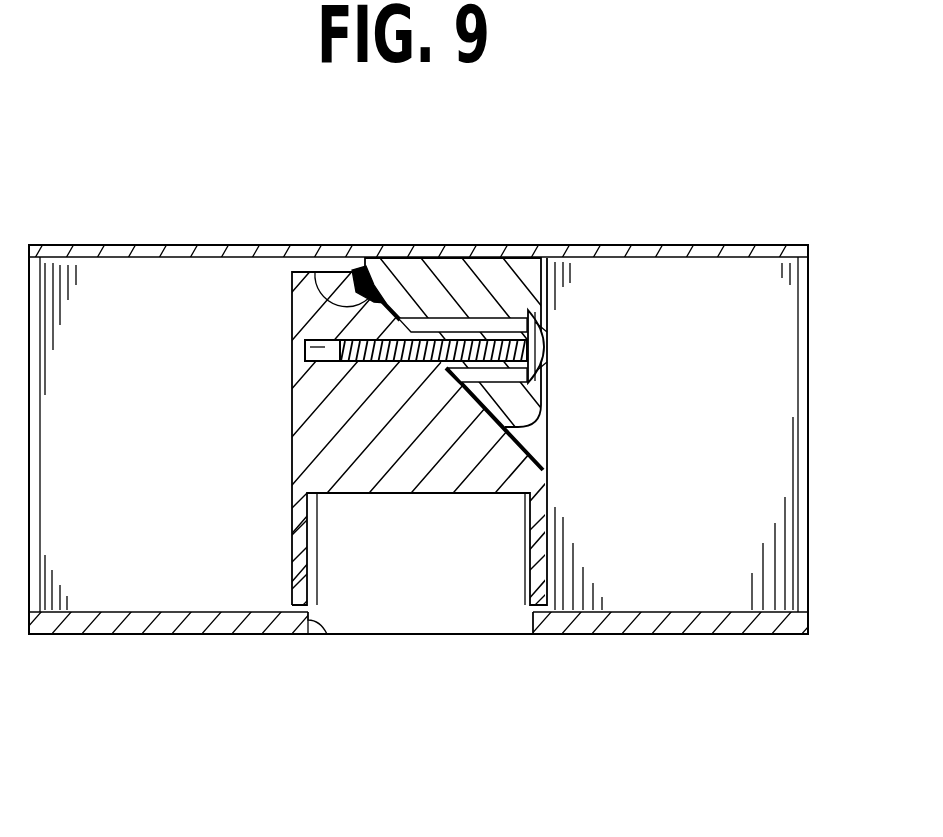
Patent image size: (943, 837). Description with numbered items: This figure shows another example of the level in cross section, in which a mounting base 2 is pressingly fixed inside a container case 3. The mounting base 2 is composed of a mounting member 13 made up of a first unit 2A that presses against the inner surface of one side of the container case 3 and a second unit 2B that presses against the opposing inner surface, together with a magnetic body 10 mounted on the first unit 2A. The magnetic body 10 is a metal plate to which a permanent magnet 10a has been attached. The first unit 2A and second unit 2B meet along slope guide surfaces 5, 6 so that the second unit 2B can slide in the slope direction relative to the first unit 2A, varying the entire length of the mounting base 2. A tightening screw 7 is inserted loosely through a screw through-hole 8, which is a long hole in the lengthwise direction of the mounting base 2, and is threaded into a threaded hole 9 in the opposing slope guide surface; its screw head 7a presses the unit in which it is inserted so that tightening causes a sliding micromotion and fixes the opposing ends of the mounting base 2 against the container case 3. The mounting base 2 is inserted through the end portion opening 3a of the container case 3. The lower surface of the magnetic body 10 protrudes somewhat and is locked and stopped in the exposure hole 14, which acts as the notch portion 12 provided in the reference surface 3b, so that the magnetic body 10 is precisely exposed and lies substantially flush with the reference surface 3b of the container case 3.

The mounting base 2 is at (434, 383).
The first unit 2A is at (292, 465).
The second unit 2B is at (447, 258).
The container case 3 is at (102, 282).
The end portion opening 3a is at (800, 307).
The reference surface 3b is at (92, 635).
The slope guide surface 5 is at (427, 293).
The slope guide surface 6 is at (313, 268).
The tightening screw 7 is at (366, 361).
The screw head 7a is at (550, 346).
The screw through-hole 8 is at (487, 327).
The threaded hole 9 is at (320, 345).
The magnetic body 10 is at (473, 620).
The permanent magnet 10a is at (537, 623).
The notch portion 12 is at (336, 687).
The mounting member 13 is at (537, 478).
The exposure hole 14 is at (327, 635).